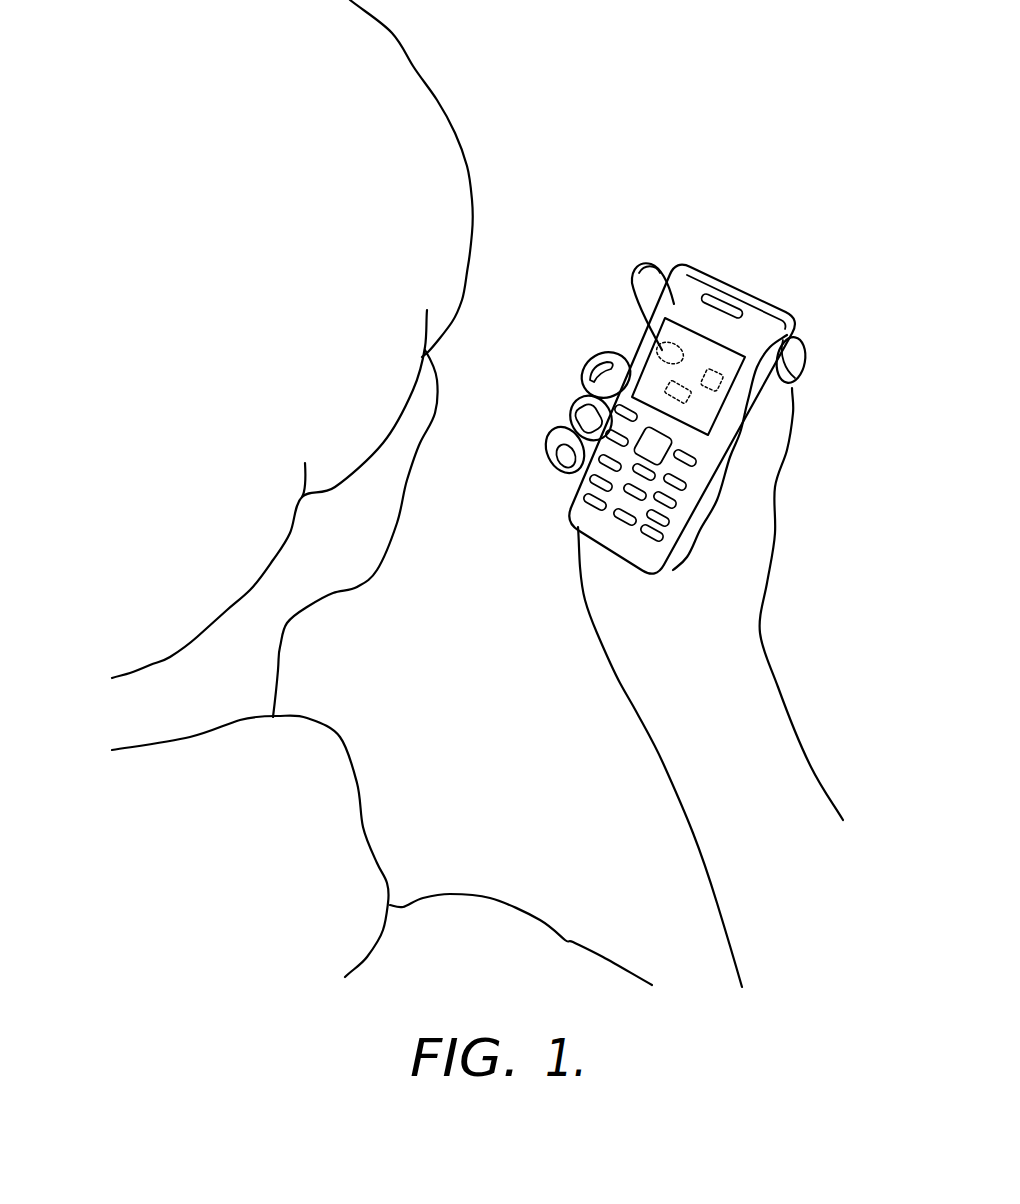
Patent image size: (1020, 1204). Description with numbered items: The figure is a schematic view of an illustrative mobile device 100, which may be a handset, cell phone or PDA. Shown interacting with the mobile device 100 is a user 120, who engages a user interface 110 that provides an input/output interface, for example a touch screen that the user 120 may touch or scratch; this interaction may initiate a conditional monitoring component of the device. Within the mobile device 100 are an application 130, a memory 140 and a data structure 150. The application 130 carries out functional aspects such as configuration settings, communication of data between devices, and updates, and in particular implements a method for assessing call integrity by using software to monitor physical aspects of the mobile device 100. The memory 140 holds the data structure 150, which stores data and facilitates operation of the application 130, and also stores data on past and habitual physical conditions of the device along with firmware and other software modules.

The mobile device 100 is at (704, 399).
The user interface 110 is at (640, 292).
The user 120 is at (510, 186).
The application 130 is at (657, 350).
The memory 140 is at (690, 397).
The data structure 150 is at (720, 387).